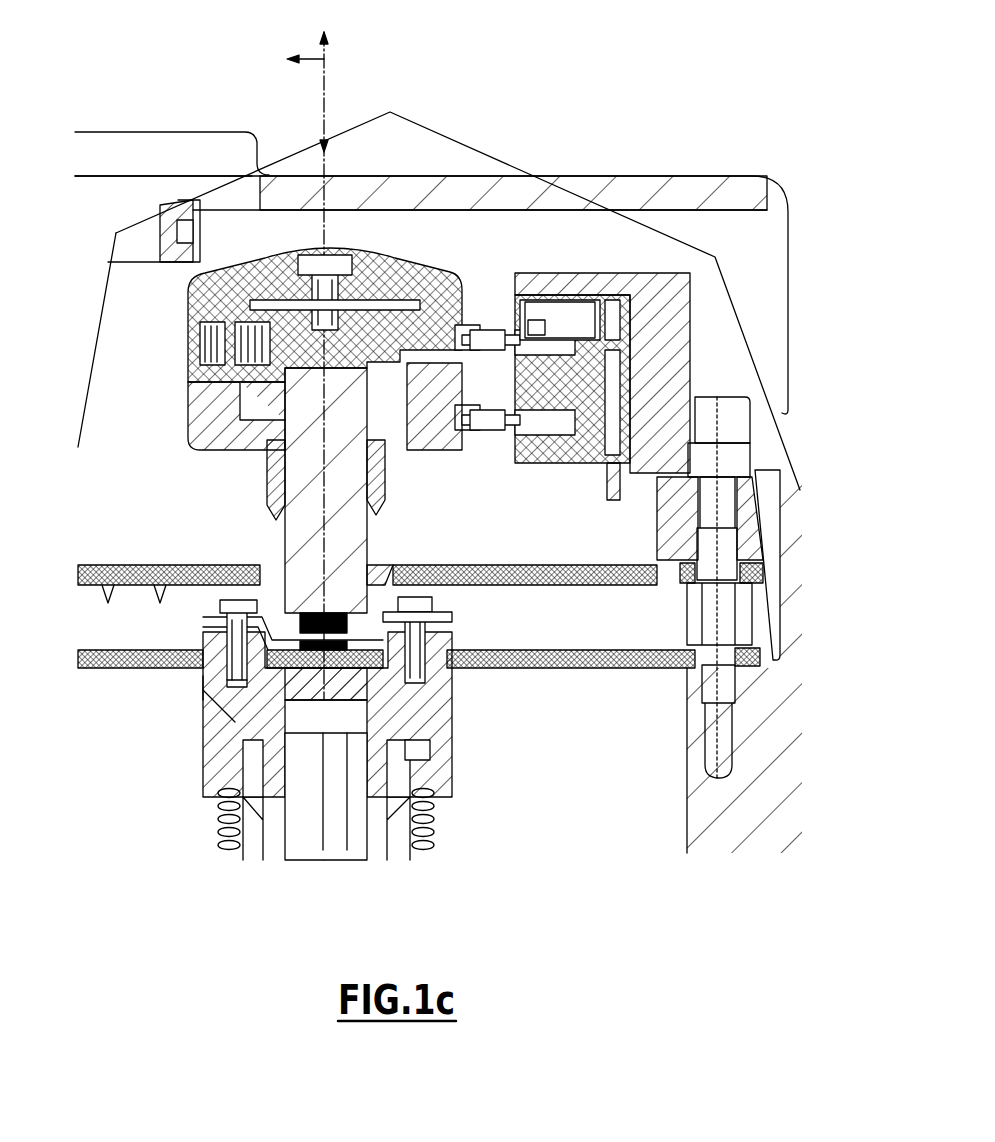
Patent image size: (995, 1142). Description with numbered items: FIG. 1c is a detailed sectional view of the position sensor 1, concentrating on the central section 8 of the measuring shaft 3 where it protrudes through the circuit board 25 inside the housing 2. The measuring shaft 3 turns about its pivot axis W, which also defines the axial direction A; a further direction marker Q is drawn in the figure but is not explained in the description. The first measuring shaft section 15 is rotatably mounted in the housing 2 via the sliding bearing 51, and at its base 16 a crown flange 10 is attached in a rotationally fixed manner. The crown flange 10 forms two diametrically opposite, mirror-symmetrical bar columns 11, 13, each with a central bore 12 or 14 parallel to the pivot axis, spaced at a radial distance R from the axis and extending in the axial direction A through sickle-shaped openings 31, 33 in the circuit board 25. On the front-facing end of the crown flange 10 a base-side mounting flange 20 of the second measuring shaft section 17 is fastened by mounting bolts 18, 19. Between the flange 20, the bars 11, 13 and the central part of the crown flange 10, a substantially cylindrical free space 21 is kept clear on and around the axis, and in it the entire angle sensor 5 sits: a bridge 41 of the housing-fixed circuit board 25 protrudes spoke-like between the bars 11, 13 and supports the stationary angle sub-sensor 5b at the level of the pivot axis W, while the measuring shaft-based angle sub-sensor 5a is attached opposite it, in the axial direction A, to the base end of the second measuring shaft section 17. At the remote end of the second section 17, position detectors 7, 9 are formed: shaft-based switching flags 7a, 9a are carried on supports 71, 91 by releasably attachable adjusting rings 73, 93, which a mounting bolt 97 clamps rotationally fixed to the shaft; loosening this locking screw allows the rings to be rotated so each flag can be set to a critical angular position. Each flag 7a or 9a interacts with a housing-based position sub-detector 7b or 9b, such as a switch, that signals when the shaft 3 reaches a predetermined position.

The position sensor 1 is at (435, 153).
The housing 2 is at (493, 192).
The measuring shaft 3 is at (203, 510).
The angle sensor 5 is at (383, 578).
The measuring shaft-based angle sub-sensor 5a is at (310, 613).
The stationary angle sub-sensor 5b is at (203, 617).
The position detector 7 is at (576, 410).
The measuring shaft-based position sub-detector 7a is at (515, 430).
The housing-based position sub-detector 7b is at (560, 470).
The central section 8 is at (463, 825).
The position detector 9 is at (487, 268).
The switching flag 9a is at (505, 330).
The housing-based position sub-detector 9b is at (540, 295).
The crown flange 10 is at (443, 788).
The bar column 11 is at (218, 683).
The bore 12 is at (203, 700).
The bar column 13 is at (430, 683).
The bore 14 is at (445, 672).
The first measuring shaft section 15 is at (345, 850).
The base 16 is at (410, 750).
The second measuring shaft section 17 is at (324, 455).
The mounting bolt 18 is at (230, 640).
The mounting bolt 19 is at (443, 630).
The base-side mounting flange 20 is at (447, 612).
The free space 21 is at (392, 570).
The circuit board 25 is at (620, 648).
The sickle-shaped opening 31 is at (203, 676).
The sickle-shaped opening 33 is at (455, 675).
The bridge 41 is at (235, 722).
The sliding bearing 51 is at (400, 850).
The support 71 is at (385, 450).
The adjusting ring 73 is at (188, 425).
The support 91 is at (372, 264).
The adjusting ring 93 is at (188, 345).
The mounting bolt 97 is at (322, 265).
The axial direction A is at (322, 97).
The transverse direction Q is at (308, 59).
The radial distance R is at (320, 740).
The pivot axis W is at (315, 850).